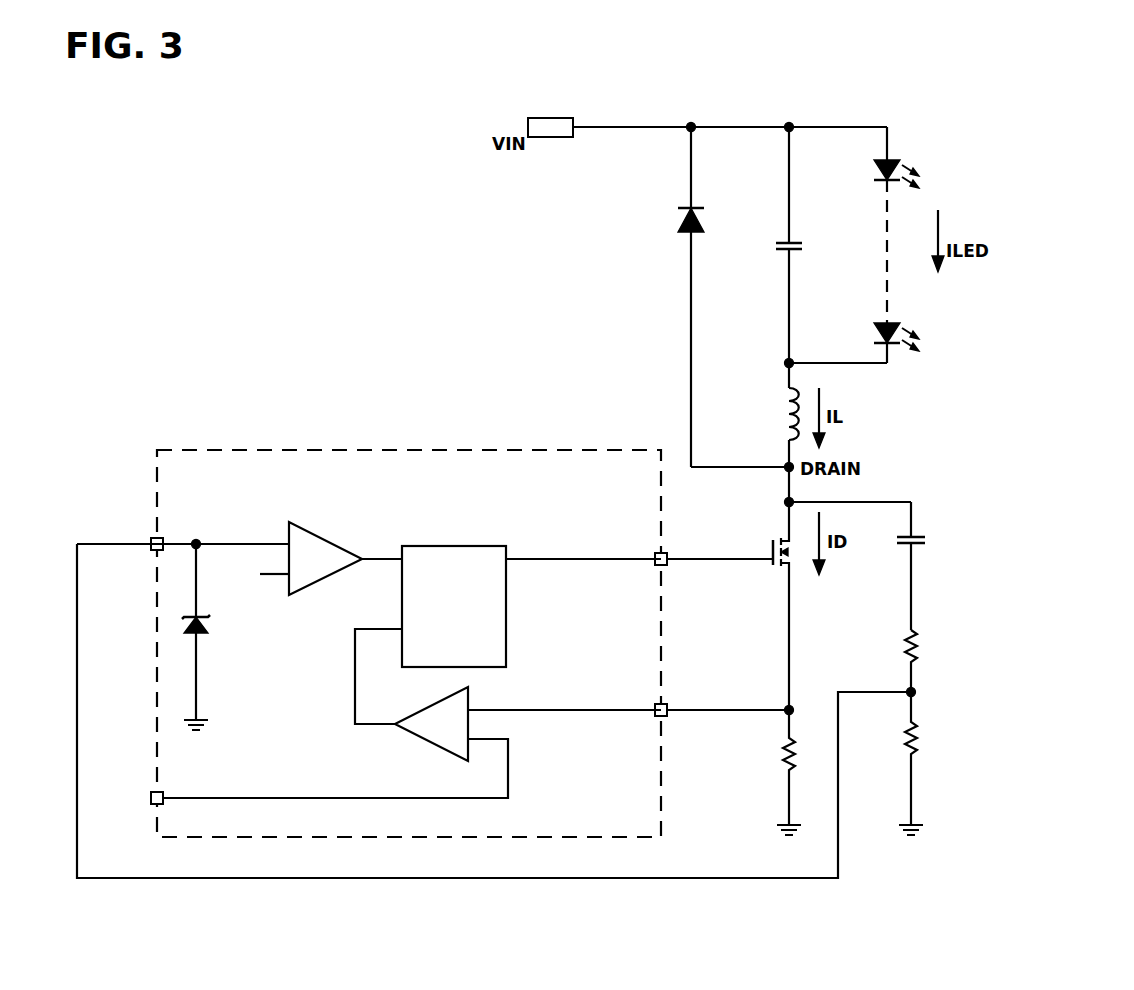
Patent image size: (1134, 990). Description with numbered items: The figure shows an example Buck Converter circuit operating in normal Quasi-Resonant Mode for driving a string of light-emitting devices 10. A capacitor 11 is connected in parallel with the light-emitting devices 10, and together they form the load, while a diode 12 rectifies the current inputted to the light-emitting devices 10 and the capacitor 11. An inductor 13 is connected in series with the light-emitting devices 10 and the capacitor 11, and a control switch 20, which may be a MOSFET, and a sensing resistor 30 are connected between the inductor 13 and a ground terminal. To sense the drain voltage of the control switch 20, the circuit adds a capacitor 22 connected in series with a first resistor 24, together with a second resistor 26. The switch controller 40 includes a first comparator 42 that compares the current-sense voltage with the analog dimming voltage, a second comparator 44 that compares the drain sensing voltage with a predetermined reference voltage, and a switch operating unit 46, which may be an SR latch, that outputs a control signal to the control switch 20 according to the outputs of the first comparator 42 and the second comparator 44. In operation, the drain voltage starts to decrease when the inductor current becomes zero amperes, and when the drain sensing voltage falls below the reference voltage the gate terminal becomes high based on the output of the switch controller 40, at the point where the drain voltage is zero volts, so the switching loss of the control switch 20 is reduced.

The light-emitting devices 10 is at (891, 160).
The capacitor 11 is at (800, 243).
The diode 12 is at (695, 208).
The inductor 13 is at (783, 416).
The control switch 20 is at (796, 553).
The capacitor 22 is at (928, 540).
The first resistor 24 is at (920, 643).
The second resistor 26 is at (920, 736).
The sensing resistor 30 is at (783, 753).
The switch controller 40 is at (422, 450).
The first comparator 42 is at (432, 747).
The second comparator 44 is at (322, 540).
The switch operating unit 46 is at (452, 546).